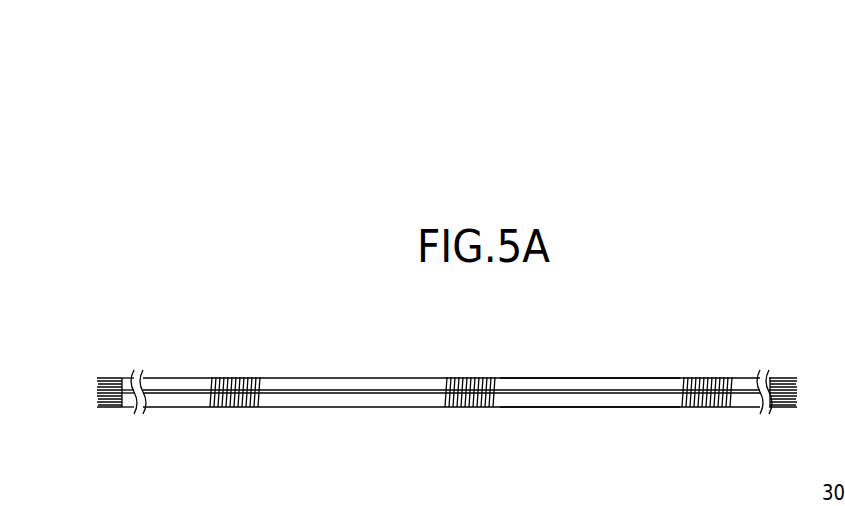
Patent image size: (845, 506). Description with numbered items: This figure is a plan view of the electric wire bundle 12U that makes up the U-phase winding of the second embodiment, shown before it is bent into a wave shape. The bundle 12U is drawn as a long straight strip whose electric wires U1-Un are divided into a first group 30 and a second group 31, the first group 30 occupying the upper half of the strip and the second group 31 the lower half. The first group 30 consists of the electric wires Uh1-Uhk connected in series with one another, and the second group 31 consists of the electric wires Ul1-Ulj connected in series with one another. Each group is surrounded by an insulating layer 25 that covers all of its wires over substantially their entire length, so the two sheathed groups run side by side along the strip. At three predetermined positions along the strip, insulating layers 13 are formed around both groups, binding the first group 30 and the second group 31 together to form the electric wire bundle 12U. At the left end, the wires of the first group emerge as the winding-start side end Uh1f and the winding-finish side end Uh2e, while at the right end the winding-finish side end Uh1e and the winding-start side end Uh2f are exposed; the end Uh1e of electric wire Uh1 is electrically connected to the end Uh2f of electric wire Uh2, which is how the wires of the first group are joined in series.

The electric wire bundle 12U is at (642, 366).
The first group 30 is at (338, 383).
The second group 31 is at (325, 404).
The insulating layer 13 is at (232, 408).
The insulating layer 25 is at (569, 378).
The winding-start side end of electric wire Uh1 Uh1f is at (97, 380).
The winding-finish side end of electric wire Uh2 Uh2e is at (97, 395).
The winding-finish side end of electric wire Uh1 Uh1e is at (797, 381).
The winding-start side end of electric wire Uh2 Uh2f is at (797, 394).